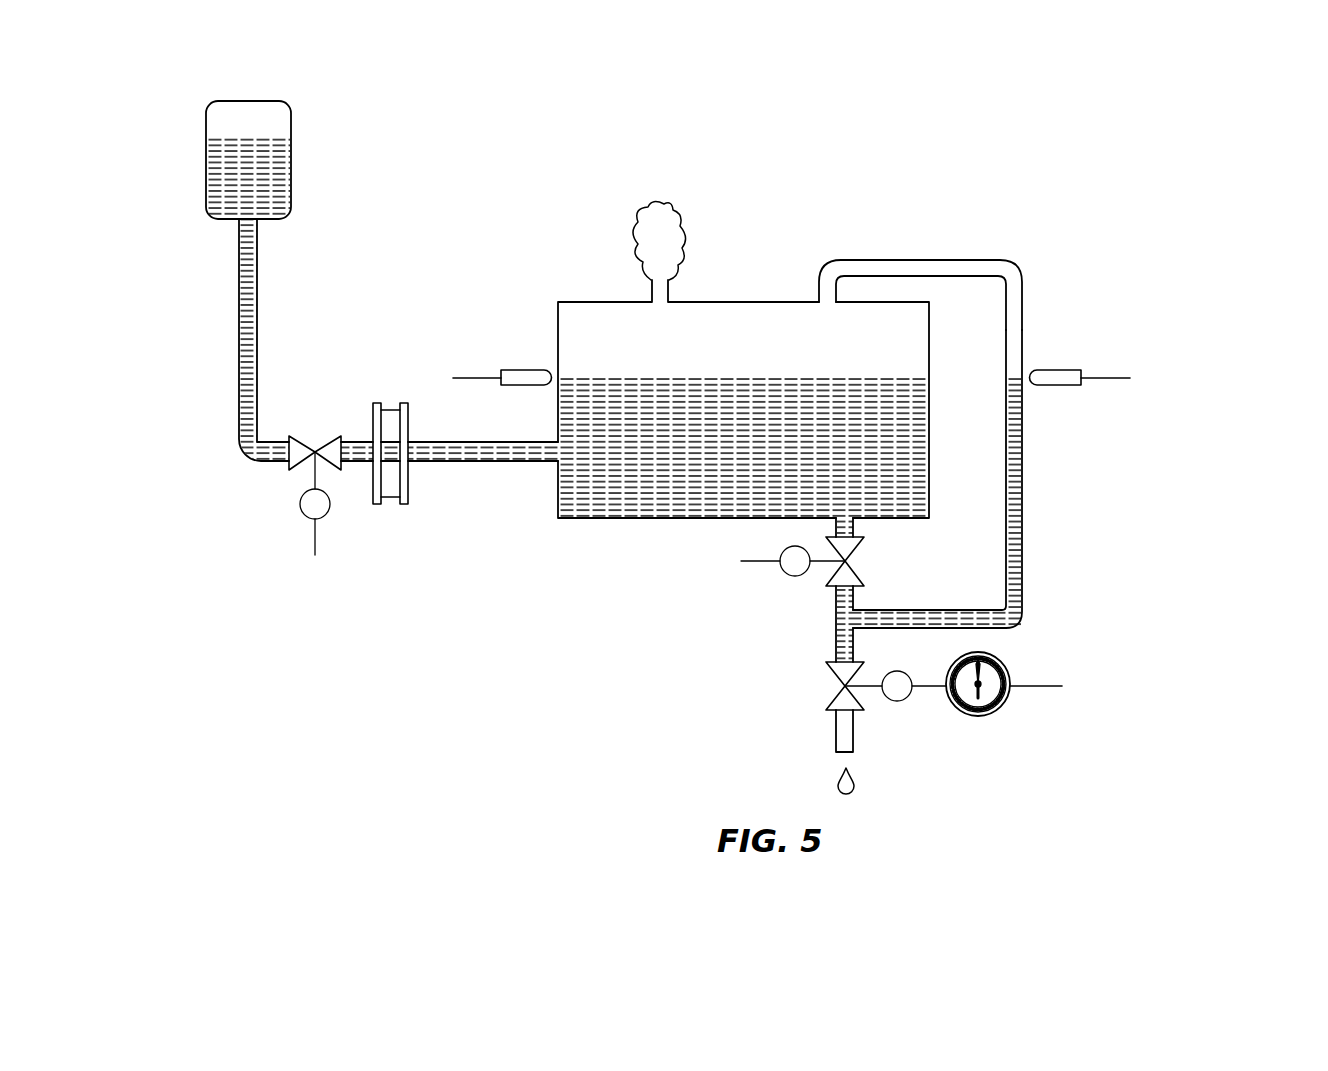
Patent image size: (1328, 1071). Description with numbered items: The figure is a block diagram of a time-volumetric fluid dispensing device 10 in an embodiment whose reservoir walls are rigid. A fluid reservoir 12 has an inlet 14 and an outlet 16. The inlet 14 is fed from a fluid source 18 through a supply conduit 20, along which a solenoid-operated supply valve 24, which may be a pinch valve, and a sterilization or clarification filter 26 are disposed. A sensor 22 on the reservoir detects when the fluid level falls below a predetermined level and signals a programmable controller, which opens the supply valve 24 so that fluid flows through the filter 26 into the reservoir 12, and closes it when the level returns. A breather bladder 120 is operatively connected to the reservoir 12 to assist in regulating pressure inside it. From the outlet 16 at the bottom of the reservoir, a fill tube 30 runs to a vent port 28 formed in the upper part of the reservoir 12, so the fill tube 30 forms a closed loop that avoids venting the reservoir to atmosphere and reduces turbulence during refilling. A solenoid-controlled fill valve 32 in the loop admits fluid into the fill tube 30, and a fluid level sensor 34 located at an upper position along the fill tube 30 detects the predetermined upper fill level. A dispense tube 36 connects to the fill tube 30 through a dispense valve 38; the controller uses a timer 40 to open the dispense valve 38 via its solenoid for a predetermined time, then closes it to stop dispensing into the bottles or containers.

The fluid dispensing device 10 is at (1064, 135).
The fluid reservoir 12 is at (620, 301).
The inlet 14 is at (558, 452).
The outlet 16 is at (848, 510).
The fluid source 18 is at (291, 141).
The supply conduit 20 is at (238, 310).
The sensor 22 is at (526, 368).
The supply valve 24 is at (290, 467).
The sterilization or clarification filter 26 is at (409, 484).
The vent port 28 is at (820, 308).
The fill tube 30 is at (1024, 318).
The fill valve 32 is at (858, 576).
The fluid level sensor 34 is at (1046, 368).
The dispense tube 36 is at (855, 734).
The dispense valve 38 is at (834, 700).
The timer 40 is at (1003, 663).
The breather bladder 120 is at (674, 223).